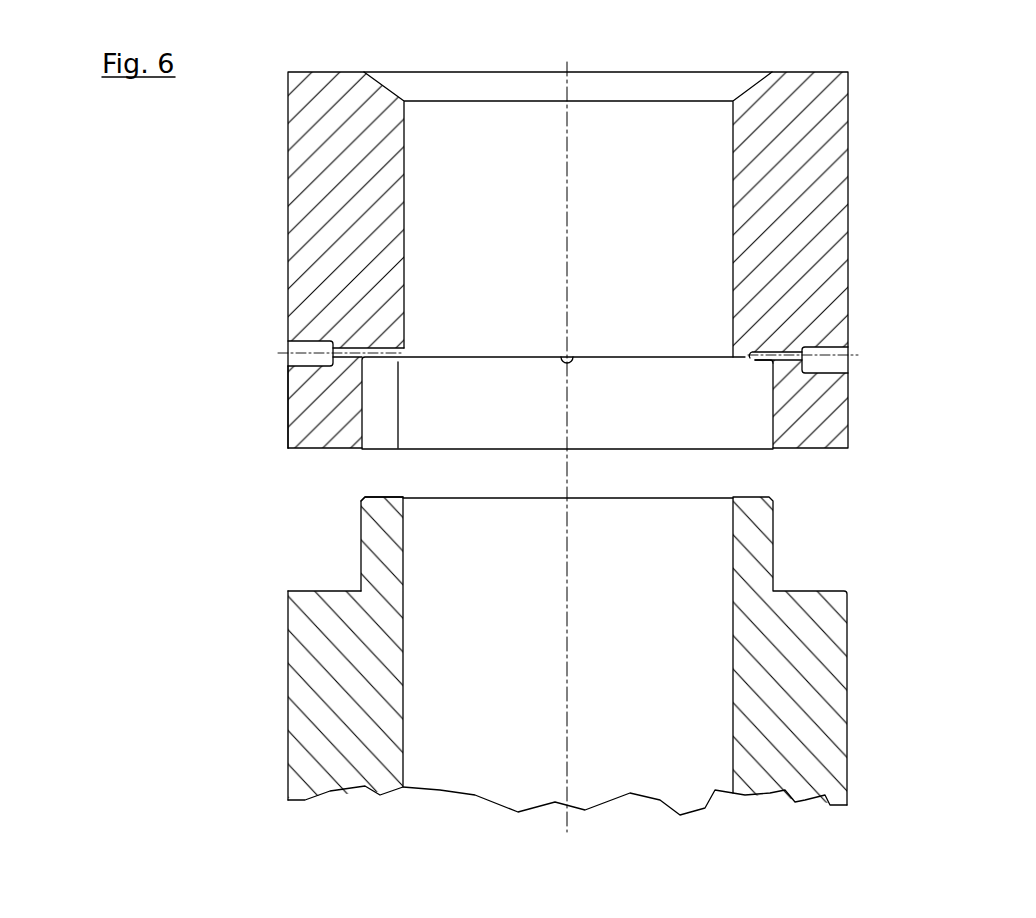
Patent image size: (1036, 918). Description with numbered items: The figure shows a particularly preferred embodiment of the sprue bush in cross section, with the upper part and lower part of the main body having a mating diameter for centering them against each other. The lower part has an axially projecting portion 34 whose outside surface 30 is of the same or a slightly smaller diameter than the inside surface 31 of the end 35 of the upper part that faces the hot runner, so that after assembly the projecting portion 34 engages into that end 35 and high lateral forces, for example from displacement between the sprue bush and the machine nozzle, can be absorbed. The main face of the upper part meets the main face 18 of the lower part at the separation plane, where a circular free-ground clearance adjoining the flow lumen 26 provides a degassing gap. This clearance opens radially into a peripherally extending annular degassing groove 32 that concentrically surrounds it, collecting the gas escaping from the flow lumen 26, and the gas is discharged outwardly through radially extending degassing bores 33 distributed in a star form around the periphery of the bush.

The flow lumen 26 is at (660, 215).
The outside surface 30 is at (781, 559).
The inside surface 31 is at (773, 410).
The annular degassing groove 32 is at (385, 352).
The degassing bores 33 is at (303, 348).
The axially projecting portion 34 is at (382, 537).
The end of the upper part 35 is at (310, 408).
The main face of the lower part 18 is at (317, 571).